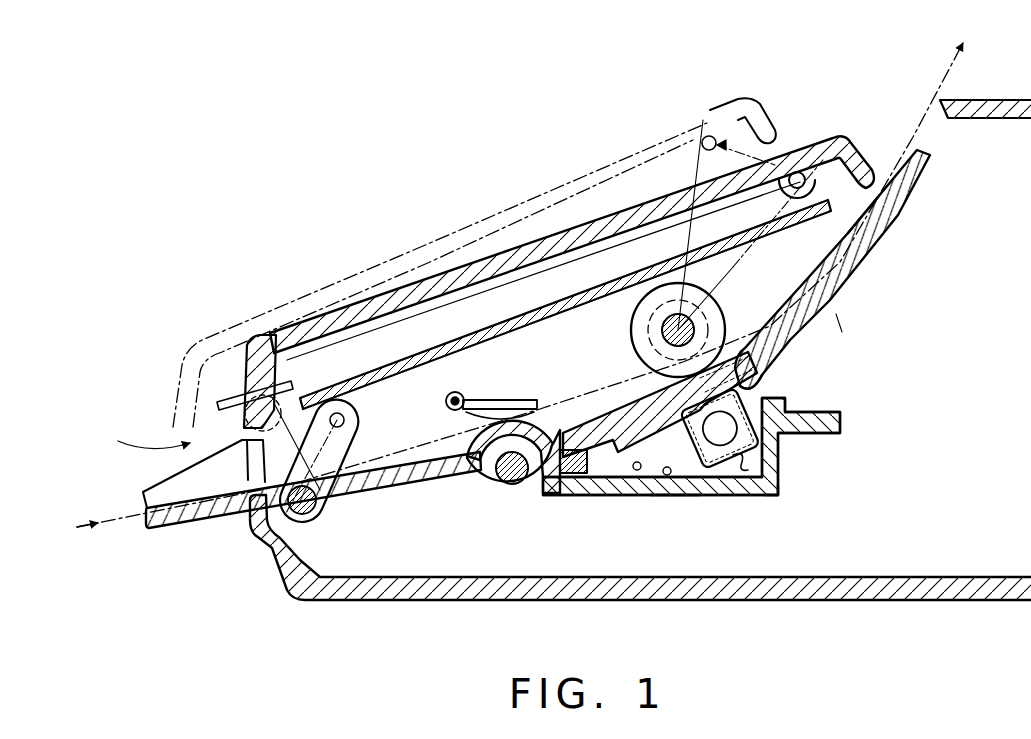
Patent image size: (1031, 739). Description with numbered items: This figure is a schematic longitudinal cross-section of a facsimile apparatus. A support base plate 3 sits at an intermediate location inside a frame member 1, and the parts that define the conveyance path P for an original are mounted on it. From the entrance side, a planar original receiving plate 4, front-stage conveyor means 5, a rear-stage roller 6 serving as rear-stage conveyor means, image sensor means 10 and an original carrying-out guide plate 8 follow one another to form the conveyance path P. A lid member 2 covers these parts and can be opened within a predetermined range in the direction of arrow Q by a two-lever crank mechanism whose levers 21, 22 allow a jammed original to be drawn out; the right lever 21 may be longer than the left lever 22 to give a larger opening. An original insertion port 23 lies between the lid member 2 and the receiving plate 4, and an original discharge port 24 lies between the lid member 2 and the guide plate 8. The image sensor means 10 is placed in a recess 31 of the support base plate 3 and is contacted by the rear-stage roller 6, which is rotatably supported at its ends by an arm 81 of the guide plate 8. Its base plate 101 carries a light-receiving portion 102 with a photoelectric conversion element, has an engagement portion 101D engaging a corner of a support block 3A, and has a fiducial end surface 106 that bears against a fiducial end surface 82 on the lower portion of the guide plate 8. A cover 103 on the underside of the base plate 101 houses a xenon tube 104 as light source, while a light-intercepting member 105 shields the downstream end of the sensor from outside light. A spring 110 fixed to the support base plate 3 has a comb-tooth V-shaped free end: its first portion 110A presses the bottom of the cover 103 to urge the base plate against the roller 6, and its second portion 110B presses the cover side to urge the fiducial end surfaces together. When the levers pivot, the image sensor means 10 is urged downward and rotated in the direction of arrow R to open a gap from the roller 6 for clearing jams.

The frame member 1 is at (840, 587).
The lid member 2 is at (828, 143).
The right lever 21 is at (843, 150).
The left lever 22 is at (360, 412).
The original insertion port 23 is at (136, 440).
The original discharge port 24 is at (880, 180).
The support base plate 3 is at (640, 488).
The support block 3A is at (560, 496).
The recess 31 is at (615, 445).
The original receiving plate 4 is at (210, 514).
The front-stage conveyor means 5 is at (498, 394).
The rear-stage roller 6 is at (737, 331).
The original carrying-out guide plate 8 is at (882, 236).
The arm 81 is at (818, 278).
The fiducial end surface 82 is at (762, 372).
The image sensor means 10 is at (612, 487).
The base plate 101 is at (573, 476).
The engagement portion 101D is at (568, 460).
The light-receiving portion 102 is at (673, 478).
The cover 103 is at (780, 457).
The xenon tube 104 is at (735, 478).
The light-intercepting member 105 is at (547, 505).
The fiducial end surface 106 is at (783, 398).
The spring 110 is at (725, 470).
The first portion 110A is at (778, 492).
The second portion 110B is at (668, 474).
The conveyance path P is at (127, 520).
The direction of lid opening Q is at (271, 312).
The direction of sensor rotation R is at (838, 323).